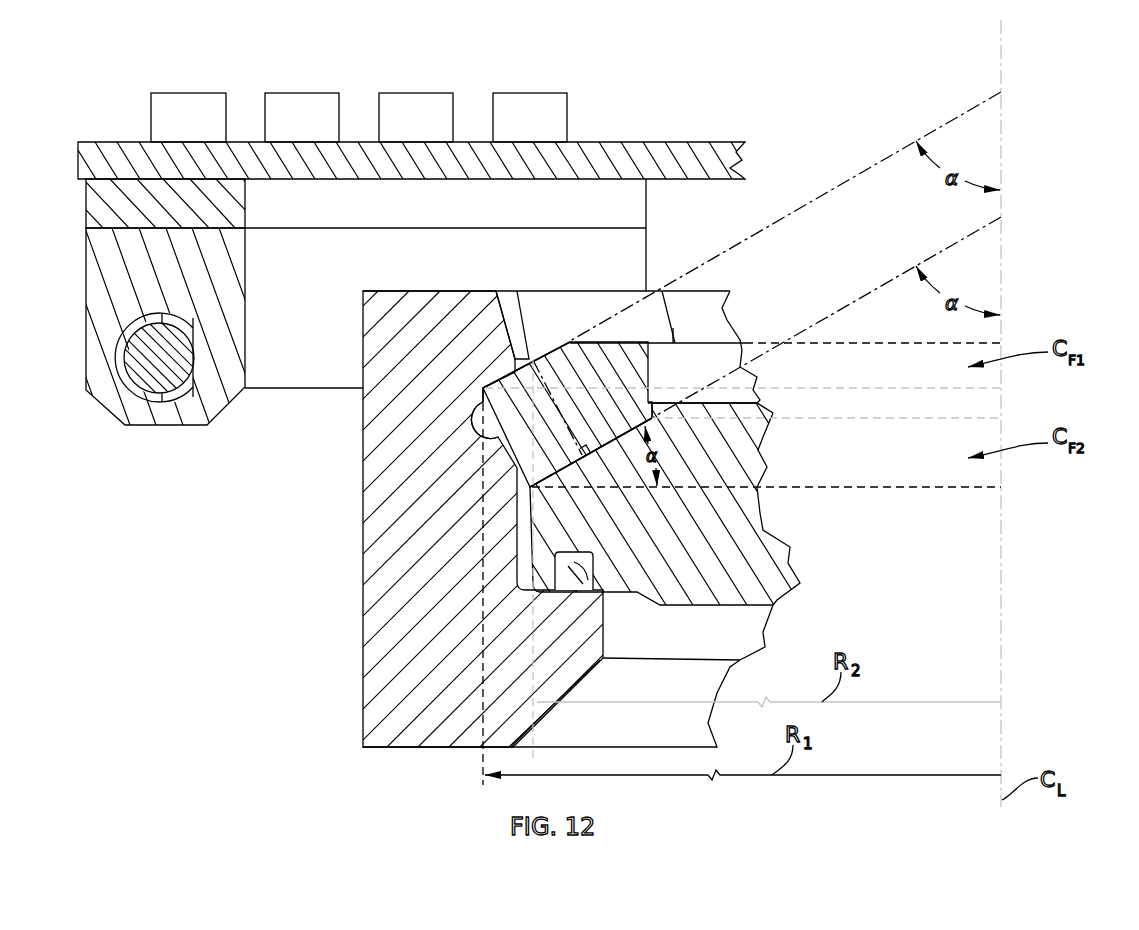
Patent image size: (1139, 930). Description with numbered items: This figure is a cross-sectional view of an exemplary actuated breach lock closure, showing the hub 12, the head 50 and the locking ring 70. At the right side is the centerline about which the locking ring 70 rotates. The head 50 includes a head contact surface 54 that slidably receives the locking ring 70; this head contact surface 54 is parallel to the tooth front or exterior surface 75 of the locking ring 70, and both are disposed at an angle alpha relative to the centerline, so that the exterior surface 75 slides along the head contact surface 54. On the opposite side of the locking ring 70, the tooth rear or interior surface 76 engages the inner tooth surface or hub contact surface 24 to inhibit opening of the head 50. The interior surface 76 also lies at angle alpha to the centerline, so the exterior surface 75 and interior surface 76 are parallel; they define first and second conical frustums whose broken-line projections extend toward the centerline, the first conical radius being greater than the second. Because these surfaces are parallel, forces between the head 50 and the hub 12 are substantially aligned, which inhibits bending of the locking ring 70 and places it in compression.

The hub 12 is at (354, 598).
The hub contact surface 24 is at (493, 377).
The head 50 is at (772, 465).
The head contact surface 54 is at (607, 448).
The locking ring 70 is at (656, 370).
The exterior surface 75 is at (570, 462).
The interior surface 76 is at (555, 355).